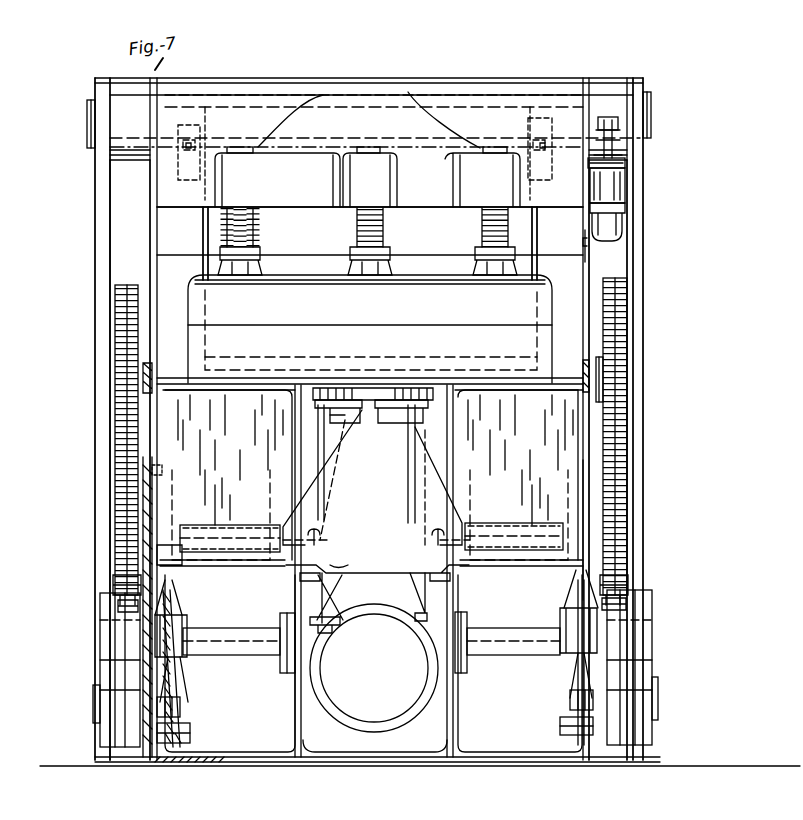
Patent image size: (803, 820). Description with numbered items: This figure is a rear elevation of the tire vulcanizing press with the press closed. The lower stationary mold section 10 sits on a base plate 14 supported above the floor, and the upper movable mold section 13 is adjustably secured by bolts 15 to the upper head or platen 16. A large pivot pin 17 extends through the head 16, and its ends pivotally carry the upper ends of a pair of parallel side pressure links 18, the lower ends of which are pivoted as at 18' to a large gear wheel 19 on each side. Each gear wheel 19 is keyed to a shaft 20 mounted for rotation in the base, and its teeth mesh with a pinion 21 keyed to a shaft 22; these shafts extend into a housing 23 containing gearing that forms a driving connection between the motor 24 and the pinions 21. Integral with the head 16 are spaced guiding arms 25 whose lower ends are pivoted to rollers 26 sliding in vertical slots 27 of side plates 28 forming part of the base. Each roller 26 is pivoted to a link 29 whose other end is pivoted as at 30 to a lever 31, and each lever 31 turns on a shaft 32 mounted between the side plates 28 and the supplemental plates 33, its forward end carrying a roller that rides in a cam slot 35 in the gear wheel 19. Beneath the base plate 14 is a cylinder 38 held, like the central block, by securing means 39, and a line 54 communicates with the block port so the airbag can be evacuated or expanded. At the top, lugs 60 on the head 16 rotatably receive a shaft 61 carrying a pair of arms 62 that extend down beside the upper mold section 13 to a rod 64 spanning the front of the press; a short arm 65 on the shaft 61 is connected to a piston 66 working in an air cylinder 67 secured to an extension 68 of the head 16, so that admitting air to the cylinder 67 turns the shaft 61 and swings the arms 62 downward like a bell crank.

The lower stationary mold section 10 is at (190, 340).
The upper movable mold section 13 is at (188, 317).
The base plate 14 is at (173, 384).
The bolts 15 is at (254, 228).
The upper head or platen 16 is at (316, 210).
The pivot pin 17 is at (283, 96).
The side pressure links 18 is at (88, 419).
The pivot of side pressure link 18' is at (94, 670).
The gear wheel 19 is at (116, 462).
The shaft 20 is at (256, 494).
The pinion 21 is at (140, 540).
The shaft 22 is at (240, 548).
The housing 23 is at (300, 568).
The motor 24 is at (370, 730).
The guiding arms 25 is at (151, 239).
The rollers 26 is at (116, 590).
The vertical slots 27 is at (140, 500).
The side plates 28 is at (142, 377).
The link 29 is at (180, 622).
The pivot 30 is at (192, 738).
The lever 31 is at (182, 708).
The shaft 32 is at (250, 650).
The supplemental plates 33 is at (294, 712).
The cam slot 35 is at (113, 620).
The cylinder 38 is at (345, 430).
The securing means 39 is at (325, 462).
The line 54 is at (360, 370).
The lugs 60 is at (160, 184).
The shaft 61 is at (348, 134).
The arms 62 is at (202, 235).
The rod 64 is at (260, 388).
The short arm 65 is at (608, 116).
The piston 66 is at (626, 145).
The air cylinder 67 is at (613, 182).
The extension 68 is at (580, 258).